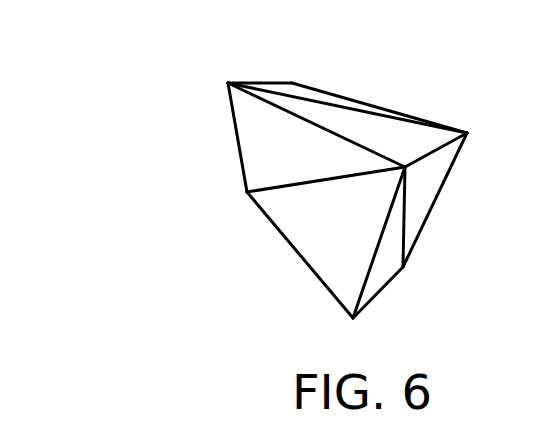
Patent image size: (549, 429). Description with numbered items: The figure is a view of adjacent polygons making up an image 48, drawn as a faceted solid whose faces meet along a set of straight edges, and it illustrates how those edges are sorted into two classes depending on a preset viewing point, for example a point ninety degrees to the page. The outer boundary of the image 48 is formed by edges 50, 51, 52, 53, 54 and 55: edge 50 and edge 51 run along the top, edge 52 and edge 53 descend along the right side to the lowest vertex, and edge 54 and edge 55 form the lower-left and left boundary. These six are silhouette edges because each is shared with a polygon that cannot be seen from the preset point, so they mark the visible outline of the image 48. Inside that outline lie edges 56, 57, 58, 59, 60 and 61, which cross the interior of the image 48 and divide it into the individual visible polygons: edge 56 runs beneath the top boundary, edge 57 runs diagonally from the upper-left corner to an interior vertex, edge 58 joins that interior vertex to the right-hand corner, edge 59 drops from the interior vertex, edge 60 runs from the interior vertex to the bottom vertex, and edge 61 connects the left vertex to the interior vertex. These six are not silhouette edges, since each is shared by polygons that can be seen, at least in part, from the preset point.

The image 48 is at (100, 90).
The edge 50 is at (253, 82).
The edge 51 is at (328, 94).
The edge 52 is at (440, 192).
The edge 53 is at (371, 301).
The edge 54 is at (285, 239).
The edge 55 is at (235, 136).
The edge 56 is at (287, 94).
The edge 57 is at (357, 141).
The edge 58 is at (440, 149).
The edge 59 is at (405, 216).
The edge 60 is at (371, 268).
The edge 61 is at (274, 191).